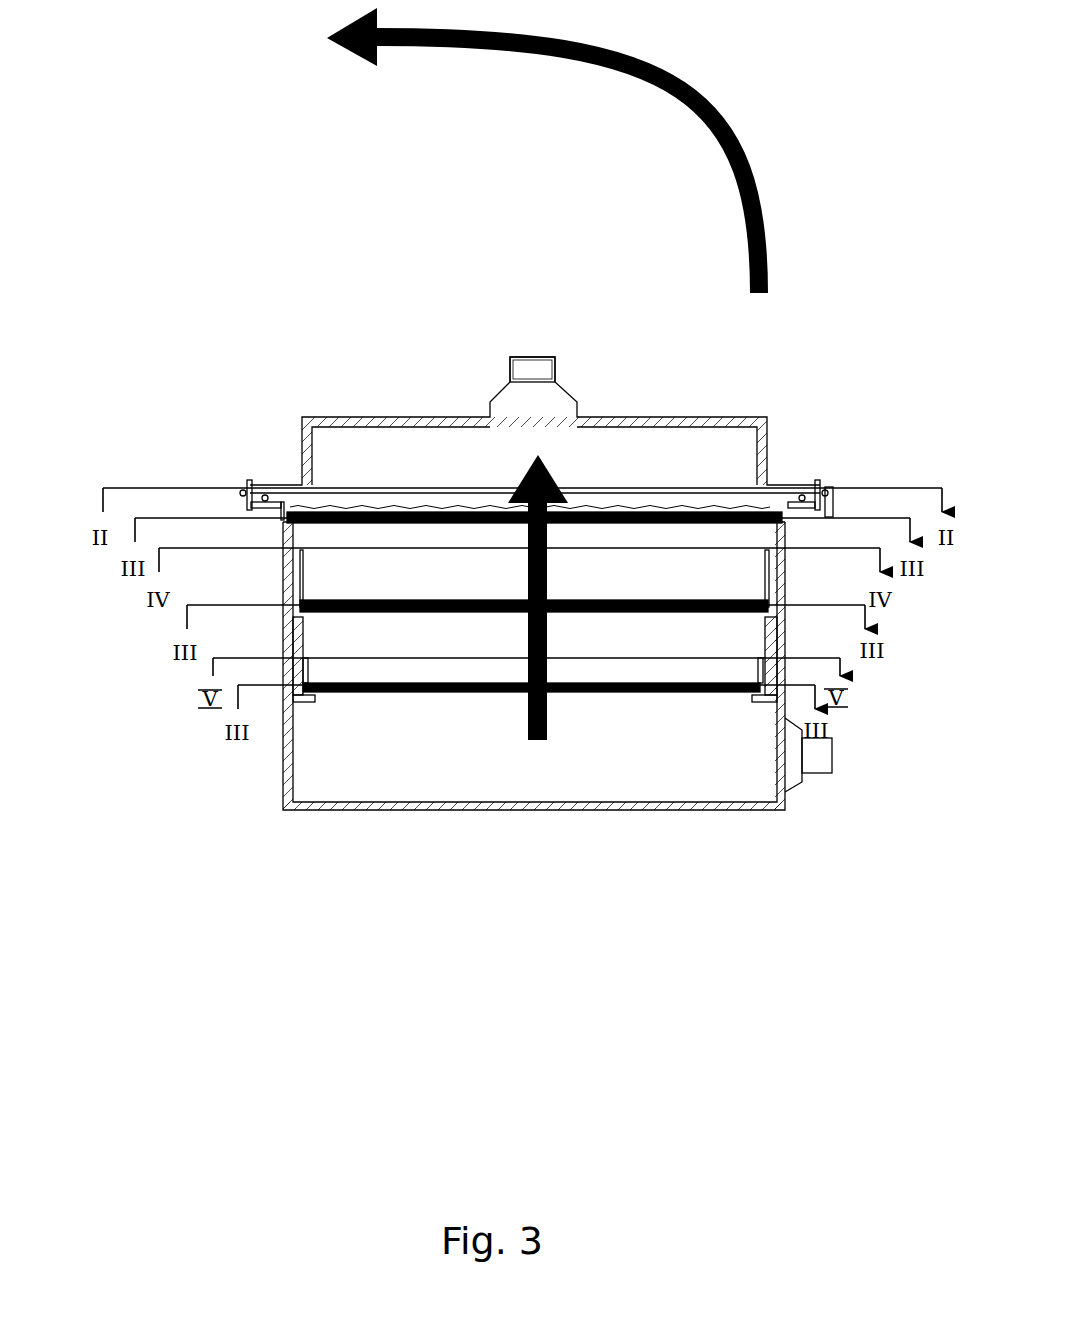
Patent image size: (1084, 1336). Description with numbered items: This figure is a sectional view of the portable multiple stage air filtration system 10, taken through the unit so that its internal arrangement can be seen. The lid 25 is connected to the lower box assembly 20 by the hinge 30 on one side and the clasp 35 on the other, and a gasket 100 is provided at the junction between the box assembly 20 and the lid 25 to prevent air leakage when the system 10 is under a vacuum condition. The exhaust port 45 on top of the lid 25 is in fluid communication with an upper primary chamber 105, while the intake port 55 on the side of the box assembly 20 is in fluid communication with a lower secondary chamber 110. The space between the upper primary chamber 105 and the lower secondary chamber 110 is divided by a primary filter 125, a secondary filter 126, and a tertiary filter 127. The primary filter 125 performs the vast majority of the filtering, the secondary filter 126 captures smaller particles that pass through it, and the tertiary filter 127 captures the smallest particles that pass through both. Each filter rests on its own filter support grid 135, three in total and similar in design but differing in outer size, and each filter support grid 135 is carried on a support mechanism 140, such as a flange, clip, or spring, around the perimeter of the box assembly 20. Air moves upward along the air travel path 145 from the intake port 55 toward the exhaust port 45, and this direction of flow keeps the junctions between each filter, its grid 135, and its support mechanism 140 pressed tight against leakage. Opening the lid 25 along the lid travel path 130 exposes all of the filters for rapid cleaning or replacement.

The portable multiple stage air filtration system 10 is at (230, 246).
The box assembly 20 is at (283, 758).
The lid 25 is at (690, 418).
The hinge 30 is at (247, 485).
The clasp 35 is at (833, 490).
The exhaust port 45 is at (537, 356).
The intake port 55 is at (815, 775).
The gasket 100 is at (803, 495).
The upper primary chamber 105 is at (579, 449).
The lower secondary chamber 110 is at (527, 757).
The primary filter 125 is at (692, 665).
The secondary filter 126 is at (635, 567).
The tertiary filter 127 is at (590, 510).
The lid travel path 130 is at (690, 100).
The filter support grid 135 is at (447, 690).
The support mechanism 140 is at (757, 707).
The air travel path 145 is at (532, 450).